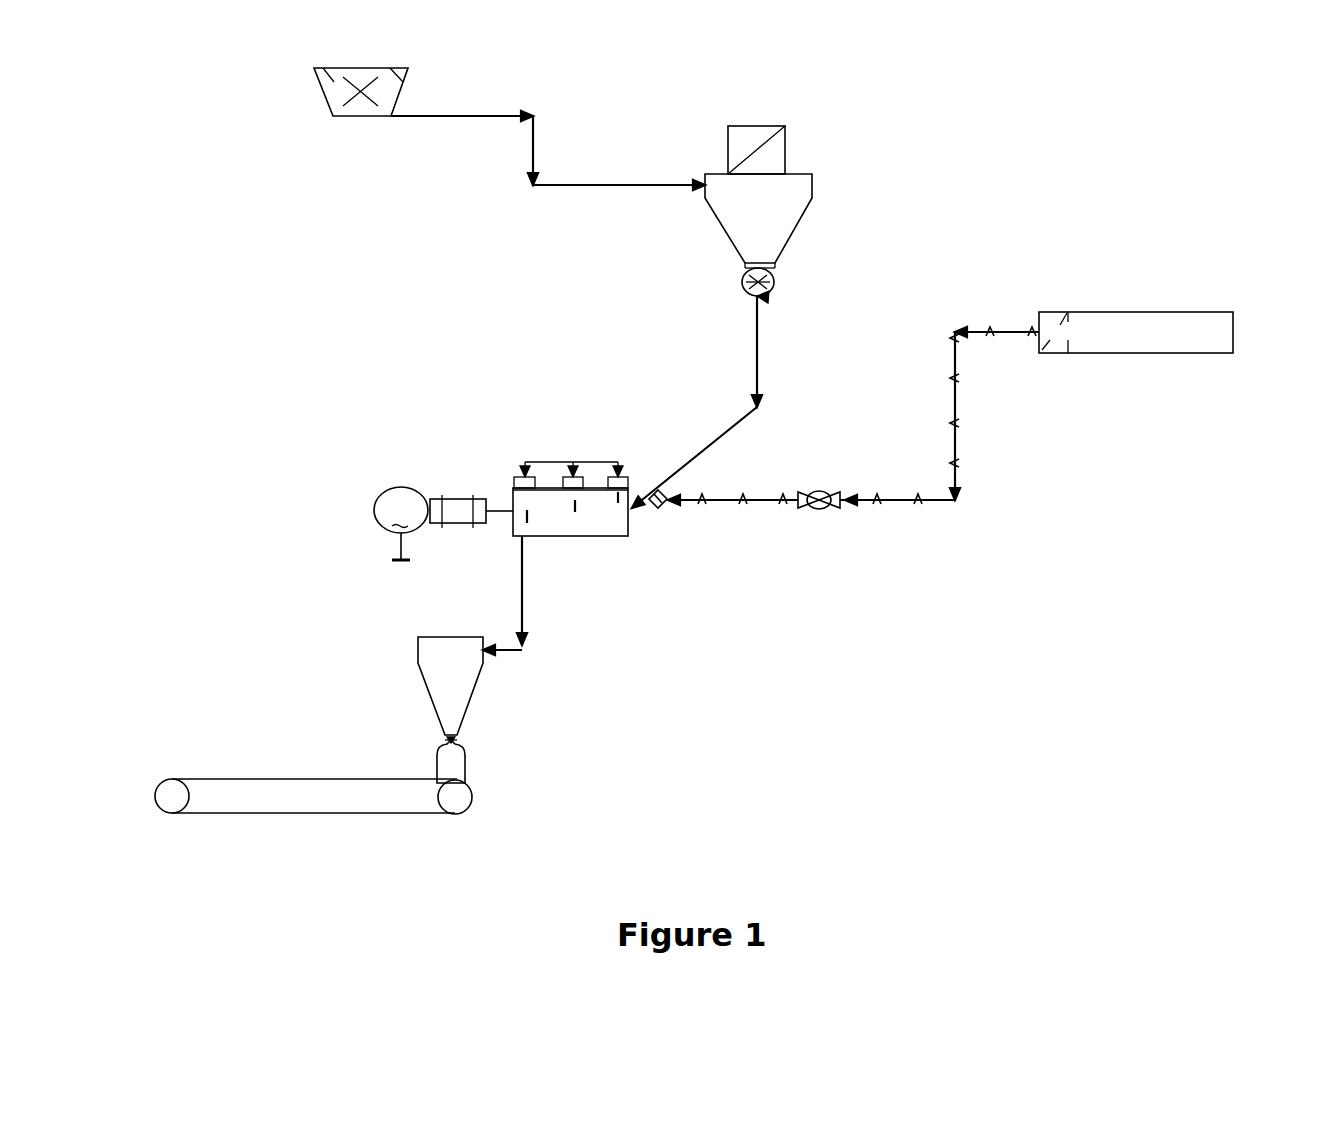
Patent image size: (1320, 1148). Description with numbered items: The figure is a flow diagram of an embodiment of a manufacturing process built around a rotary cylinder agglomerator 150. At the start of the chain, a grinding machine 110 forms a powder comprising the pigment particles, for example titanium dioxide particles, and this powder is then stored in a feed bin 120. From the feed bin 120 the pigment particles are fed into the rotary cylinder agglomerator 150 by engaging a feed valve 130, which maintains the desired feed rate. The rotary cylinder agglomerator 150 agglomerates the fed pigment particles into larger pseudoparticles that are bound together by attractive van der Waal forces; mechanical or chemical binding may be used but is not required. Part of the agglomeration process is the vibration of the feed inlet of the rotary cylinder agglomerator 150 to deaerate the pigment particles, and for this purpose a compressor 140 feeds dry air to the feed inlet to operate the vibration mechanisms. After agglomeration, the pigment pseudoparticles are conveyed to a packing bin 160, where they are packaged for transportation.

The grinding machine 110 is at (332, 98).
The feed bin 120 is at (812, 188).
The feed valve 130 is at (775, 283).
The compressor 140 is at (1147, 312).
The rotary cylinder agglomerator 150 is at (578, 536).
The packing bin 160 is at (473, 697).